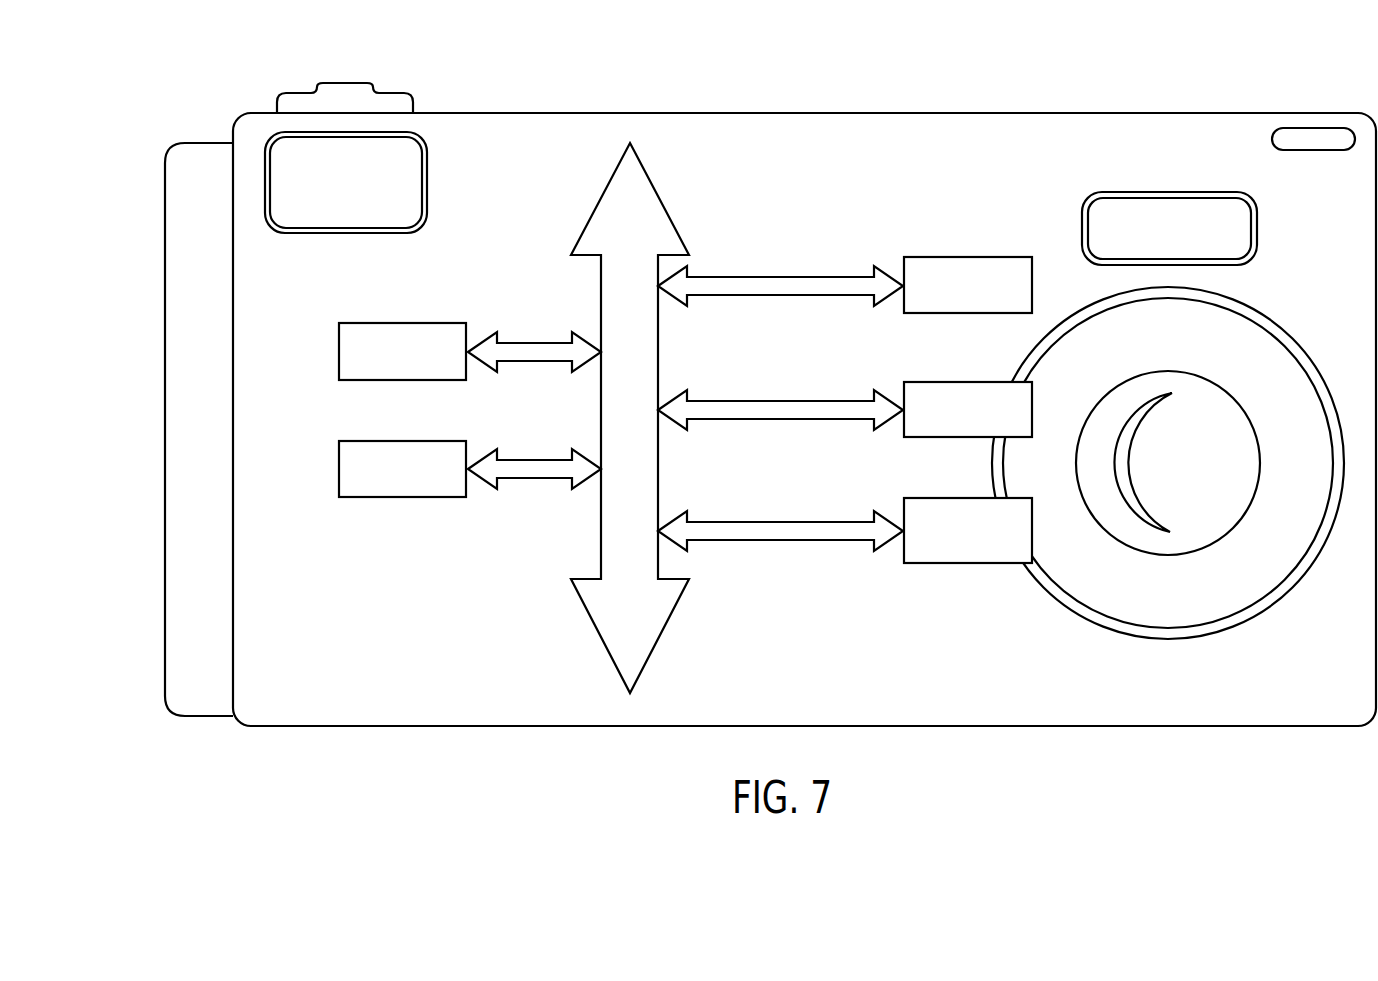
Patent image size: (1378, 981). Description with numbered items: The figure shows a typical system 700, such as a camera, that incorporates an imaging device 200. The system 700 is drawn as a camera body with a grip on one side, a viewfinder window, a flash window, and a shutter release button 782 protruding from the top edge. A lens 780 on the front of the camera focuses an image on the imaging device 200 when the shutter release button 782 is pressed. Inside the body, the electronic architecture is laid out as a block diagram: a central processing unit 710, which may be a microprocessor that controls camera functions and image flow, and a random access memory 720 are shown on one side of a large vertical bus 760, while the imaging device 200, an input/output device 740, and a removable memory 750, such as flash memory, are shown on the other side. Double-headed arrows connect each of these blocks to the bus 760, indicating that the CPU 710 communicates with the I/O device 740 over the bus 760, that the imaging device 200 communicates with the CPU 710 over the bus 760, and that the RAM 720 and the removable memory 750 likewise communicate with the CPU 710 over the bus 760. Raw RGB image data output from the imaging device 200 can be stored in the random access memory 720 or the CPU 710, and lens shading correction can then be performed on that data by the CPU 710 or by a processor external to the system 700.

The system 700 is at (1207, 76).
The shutter release button 782 is at (363, 88).
The central processing unit 710 is at (339, 352).
The random access memory 720 is at (339, 470).
The bus 760 is at (603, 645).
The imaging device 200 is at (1032, 290).
The input/output device 740 is at (1032, 412).
The removable memory 750 is at (1032, 535).
The lens 780 is at (1233, 410).